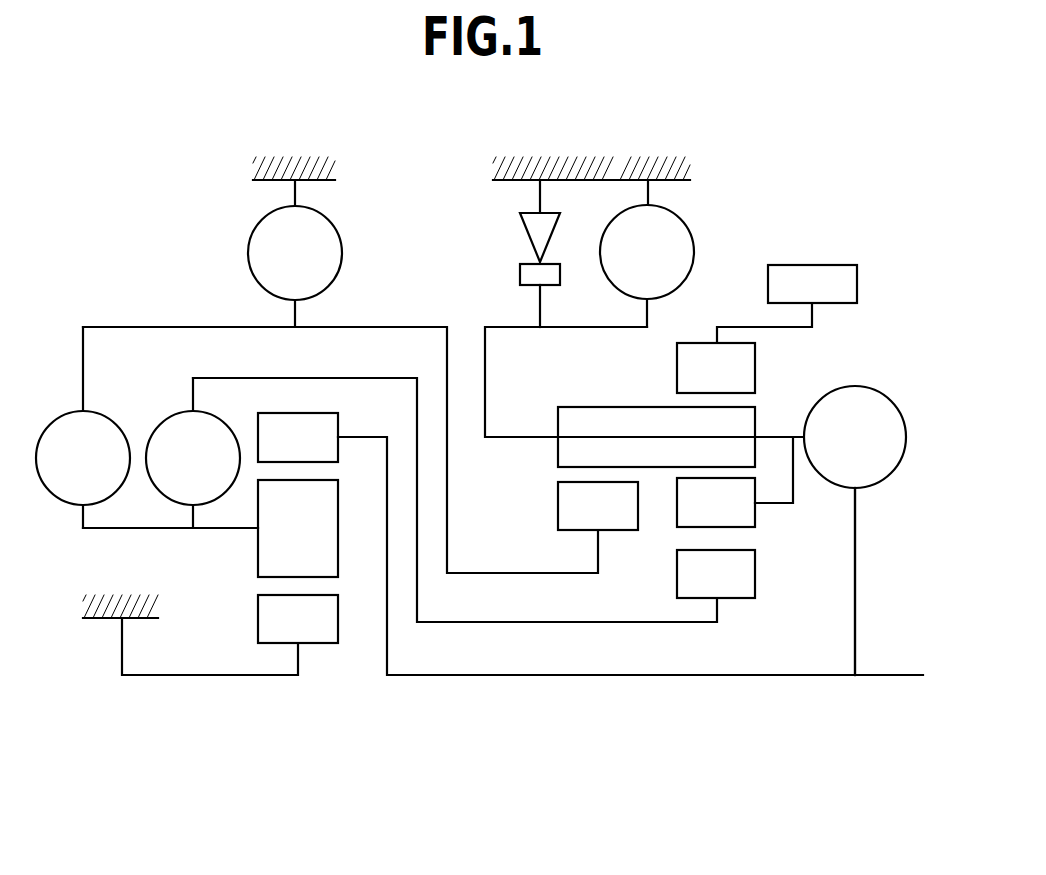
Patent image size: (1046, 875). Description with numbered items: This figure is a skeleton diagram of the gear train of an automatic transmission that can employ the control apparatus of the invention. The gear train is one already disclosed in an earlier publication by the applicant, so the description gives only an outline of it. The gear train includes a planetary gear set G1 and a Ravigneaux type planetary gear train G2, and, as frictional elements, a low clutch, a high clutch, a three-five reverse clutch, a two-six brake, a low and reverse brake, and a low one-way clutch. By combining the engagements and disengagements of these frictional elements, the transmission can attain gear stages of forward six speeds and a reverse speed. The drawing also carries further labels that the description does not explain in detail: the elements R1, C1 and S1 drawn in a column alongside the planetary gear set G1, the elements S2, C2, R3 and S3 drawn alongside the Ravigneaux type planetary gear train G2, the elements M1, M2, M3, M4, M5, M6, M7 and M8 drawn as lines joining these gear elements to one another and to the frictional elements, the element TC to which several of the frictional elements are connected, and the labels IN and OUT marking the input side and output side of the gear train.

The transmission case TC is at (335, 181).
The first rotating member (input shaft) M1 is at (478, 675).
The second rotating member M2 is at (855, 557).
The third rotating member M3 is at (220, 529).
The fourth rotating member M4 is at (220, 676).
The fifth rotating member M5 is at (478, 622).
The sixth rotating member M6 is at (478, 573).
The seventh rotating member M7 is at (485, 352).
The eighth rotating member (output) M8 is at (725, 327).
The planetary gear set G1 is at (323, 650).
The Ravigneaux type planetary gear train G2 is at (760, 592).
The first ring gear R1 is at (298, 437).
The first carrier C1 is at (298, 528).
The first sun gear S1 is at (298, 619).
The second sun gear S2 is at (598, 506).
The second carrier C2 is at (614, 406).
The third ring gear R3 is at (716, 368).
The third sun gear S3 is at (716, 574).
The input IN is at (907, 660).
The output OUT is at (812, 284).